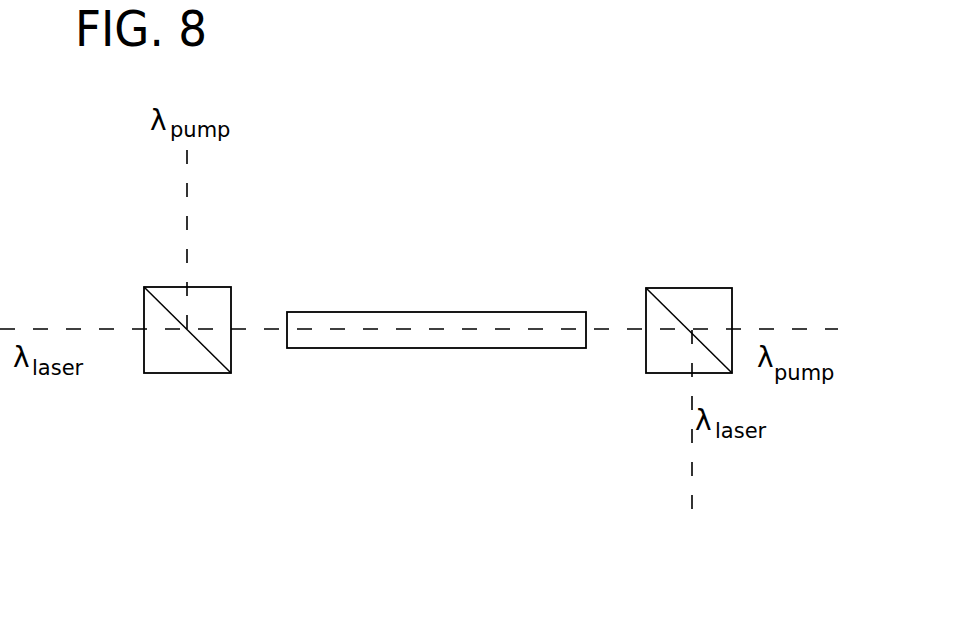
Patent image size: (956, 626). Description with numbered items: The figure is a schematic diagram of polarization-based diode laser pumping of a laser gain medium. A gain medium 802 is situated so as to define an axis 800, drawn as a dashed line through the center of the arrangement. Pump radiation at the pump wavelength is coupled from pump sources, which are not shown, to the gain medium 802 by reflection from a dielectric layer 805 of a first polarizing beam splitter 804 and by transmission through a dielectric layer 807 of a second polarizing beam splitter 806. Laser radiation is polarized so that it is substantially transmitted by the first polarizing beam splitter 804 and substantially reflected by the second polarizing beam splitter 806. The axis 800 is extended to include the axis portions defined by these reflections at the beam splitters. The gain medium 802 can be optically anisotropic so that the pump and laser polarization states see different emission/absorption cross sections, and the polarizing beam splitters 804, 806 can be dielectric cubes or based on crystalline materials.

The axis 800 is at (262, 318).
The gain medium 802 is at (437, 312).
The first polarizing beam splitter 804 is at (231, 287).
The dielectric layer 805 is at (197, 342).
The second polarizing beam splitter 806 is at (667, 288).
The dielectric layer 807 is at (675, 315).